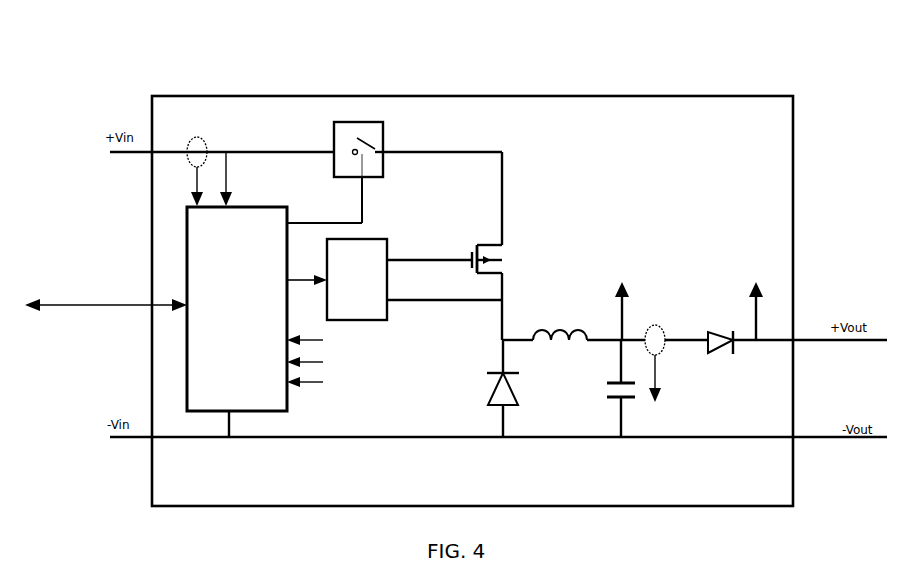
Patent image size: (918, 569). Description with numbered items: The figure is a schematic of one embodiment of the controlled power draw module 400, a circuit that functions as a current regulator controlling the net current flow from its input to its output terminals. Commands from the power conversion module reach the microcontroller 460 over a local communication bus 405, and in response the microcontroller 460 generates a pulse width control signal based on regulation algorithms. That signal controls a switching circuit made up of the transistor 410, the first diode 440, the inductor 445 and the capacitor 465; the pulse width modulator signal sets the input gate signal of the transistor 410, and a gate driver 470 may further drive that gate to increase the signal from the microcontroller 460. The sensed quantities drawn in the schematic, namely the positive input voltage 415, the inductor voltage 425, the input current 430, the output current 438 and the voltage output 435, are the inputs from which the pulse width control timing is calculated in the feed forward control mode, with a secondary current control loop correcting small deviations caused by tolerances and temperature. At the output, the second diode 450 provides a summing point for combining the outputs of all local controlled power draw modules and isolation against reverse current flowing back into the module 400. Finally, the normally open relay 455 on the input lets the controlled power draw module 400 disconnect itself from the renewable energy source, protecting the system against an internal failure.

The controlled power draw module 400 is at (752, 81).
The local communication bus 405 is at (107, 307).
The transistor 410 is at (520, 247).
The input voltage 415 is at (120, 135).
The inductor voltage 425 is at (618, 260).
The input current 430 is at (177, 122).
The voltage output 435 is at (762, 260).
The output current 438 is at (707, 413).
The first diode 440 is at (533, 377).
The inductor 445 is at (562, 303).
The second diode 450 is at (728, 370).
The relay 455 is at (335, 117).
The microcontroller 460 is at (221, 246).
The capacitor 465 is at (585, 392).
The gate driver 470 is at (373, 237).